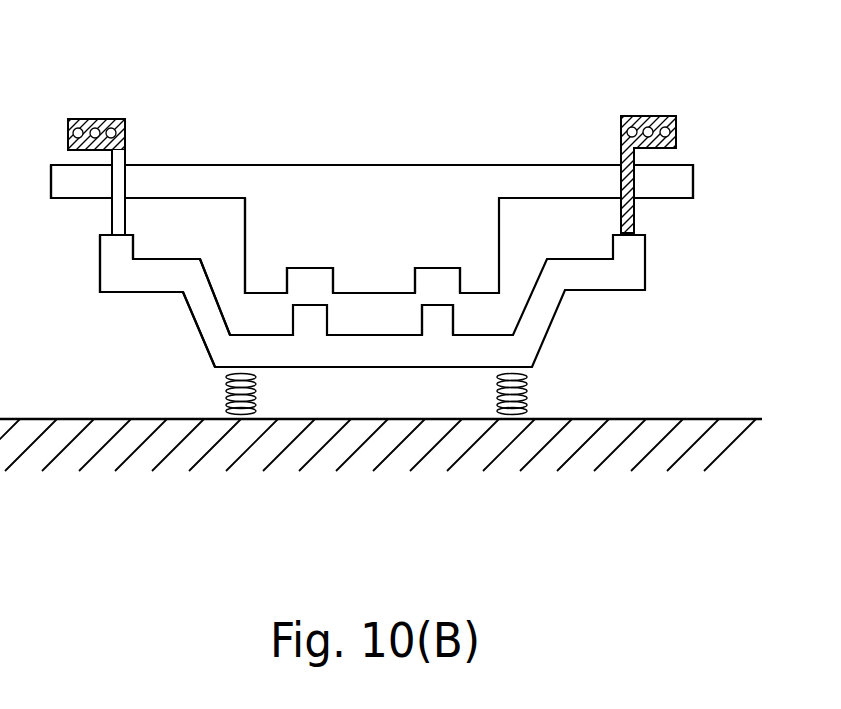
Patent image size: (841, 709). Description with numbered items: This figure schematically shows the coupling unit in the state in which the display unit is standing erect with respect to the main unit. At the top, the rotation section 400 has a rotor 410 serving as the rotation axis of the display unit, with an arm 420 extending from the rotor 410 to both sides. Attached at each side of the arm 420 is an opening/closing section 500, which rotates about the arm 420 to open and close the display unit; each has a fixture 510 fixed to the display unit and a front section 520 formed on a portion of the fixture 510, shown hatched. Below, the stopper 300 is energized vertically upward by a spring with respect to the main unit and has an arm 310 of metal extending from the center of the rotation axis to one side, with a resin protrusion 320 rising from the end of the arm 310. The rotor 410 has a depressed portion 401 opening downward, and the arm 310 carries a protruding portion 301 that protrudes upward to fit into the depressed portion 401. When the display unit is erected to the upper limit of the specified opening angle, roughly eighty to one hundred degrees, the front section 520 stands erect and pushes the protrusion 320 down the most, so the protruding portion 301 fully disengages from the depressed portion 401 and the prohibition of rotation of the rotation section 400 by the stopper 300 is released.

The stopper 300 is at (636, 308).
The protruding portion 301 is at (440, 322).
The arm 310 is at (205, 315).
The protrusion 320 is at (122, 247).
The rotation section 400 is at (532, 140).
The depressed portion 401 is at (452, 280).
The rotor 410 is at (275, 255).
The arm 420 is at (178, 180).
The opening/closing section 500 is at (397, 129).
The fixture 510 is at (83, 130).
The front section 520 is at (125, 220).